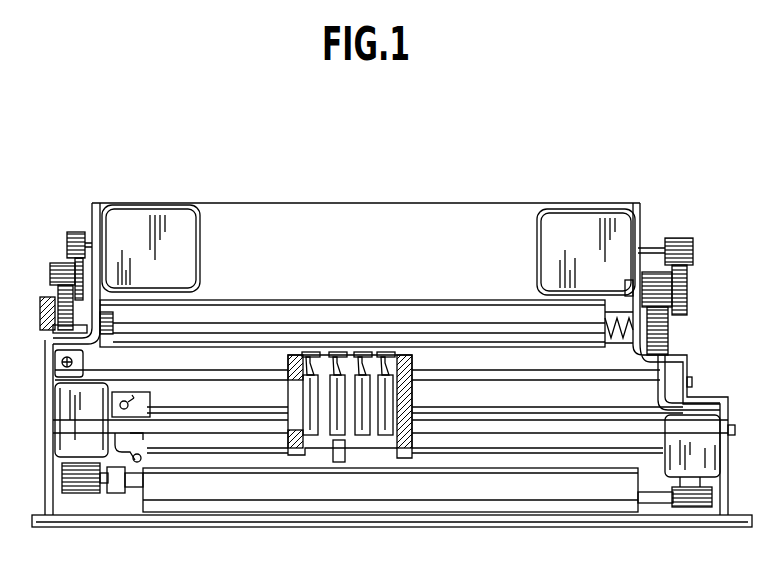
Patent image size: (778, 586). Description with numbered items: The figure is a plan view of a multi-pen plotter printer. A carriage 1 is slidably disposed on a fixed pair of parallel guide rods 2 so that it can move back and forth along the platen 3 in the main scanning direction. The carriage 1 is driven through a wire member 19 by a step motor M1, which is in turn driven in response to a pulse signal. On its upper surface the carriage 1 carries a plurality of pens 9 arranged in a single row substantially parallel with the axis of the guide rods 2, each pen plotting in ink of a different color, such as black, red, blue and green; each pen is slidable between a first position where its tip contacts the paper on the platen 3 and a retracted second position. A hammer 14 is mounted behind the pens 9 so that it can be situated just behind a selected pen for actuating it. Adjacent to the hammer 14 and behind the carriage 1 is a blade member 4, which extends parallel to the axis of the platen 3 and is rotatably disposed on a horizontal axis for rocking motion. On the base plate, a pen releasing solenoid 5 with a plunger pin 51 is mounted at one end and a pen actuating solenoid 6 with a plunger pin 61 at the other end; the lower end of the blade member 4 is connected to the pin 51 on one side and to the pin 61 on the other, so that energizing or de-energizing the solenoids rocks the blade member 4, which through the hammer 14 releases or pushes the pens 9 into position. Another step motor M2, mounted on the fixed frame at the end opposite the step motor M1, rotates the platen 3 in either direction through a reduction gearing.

The carriage 1 is at (362, 420).
The guide rods 2 is at (200, 380).
The platen 3 is at (330, 306).
The blade member 4 is at (552, 495).
The pen releasing solenoid 5 is at (695, 480).
The plunger pin 51 is at (659, 503).
The pen actuating solenoid 6 is at (62, 447).
The plunger pin 61 is at (103, 495).
The pens 9 is at (385, 432).
The hammer 14 is at (338, 463).
The wire member 19 is at (48, 322).
The step motor M1 is at (162, 212).
The step motor M2 is at (574, 216).